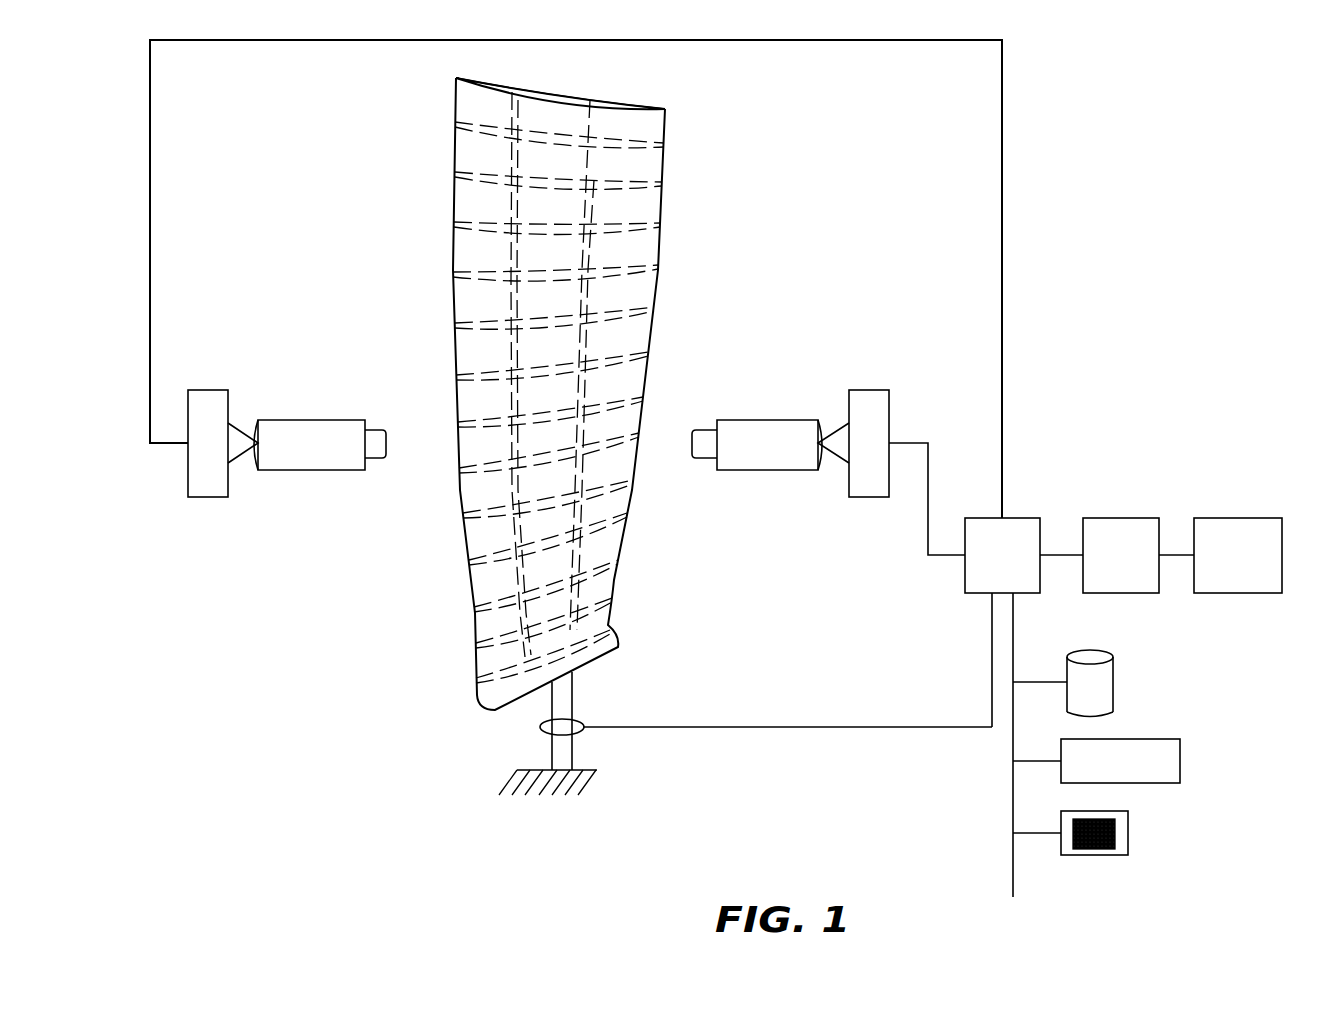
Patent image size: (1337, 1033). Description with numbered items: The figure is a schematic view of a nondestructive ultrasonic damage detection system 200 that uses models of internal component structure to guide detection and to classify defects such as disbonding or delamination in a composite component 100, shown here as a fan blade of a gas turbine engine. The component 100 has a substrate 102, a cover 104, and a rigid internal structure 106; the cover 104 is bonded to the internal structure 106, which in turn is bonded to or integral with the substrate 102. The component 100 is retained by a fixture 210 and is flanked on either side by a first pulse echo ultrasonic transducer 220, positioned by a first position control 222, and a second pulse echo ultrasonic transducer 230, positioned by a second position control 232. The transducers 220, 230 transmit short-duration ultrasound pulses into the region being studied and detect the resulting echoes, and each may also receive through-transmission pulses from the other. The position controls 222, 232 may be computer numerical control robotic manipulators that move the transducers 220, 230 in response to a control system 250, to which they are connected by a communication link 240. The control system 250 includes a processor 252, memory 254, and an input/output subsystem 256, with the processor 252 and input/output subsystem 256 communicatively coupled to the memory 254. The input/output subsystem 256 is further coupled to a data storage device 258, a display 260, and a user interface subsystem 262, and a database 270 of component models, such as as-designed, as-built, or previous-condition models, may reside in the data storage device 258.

The component 100 is at (553, 377).
The substrate 102 is at (640, 150).
The cover 104 is at (543, 93).
The rigid internal structure 106 is at (630, 132).
The nondestructive ultrasonic damage detection system 200 is at (1222, 212).
The fixture 210 is at (542, 785).
The first pulse echo ultrasonic transducer 220 is at (333, 458).
The first position control 222 is at (215, 492).
The second pulse echo ultrasonic transducer 230 is at (790, 458).
The second position control 232 is at (873, 492).
The communication link 240 is at (933, 103).
The control system 250 is at (1163, 423).
The processor 252 is at (1228, 518).
The memory 254 is at (1114, 518).
The input/output (I/O) subsystem 256 is at (1022, 518).
The data storage device 258 is at (1122, 665).
The display 260 is at (1180, 761).
The user interface (UI) subsystem 262 is at (1128, 833).
The database 270 is at (1092, 658).